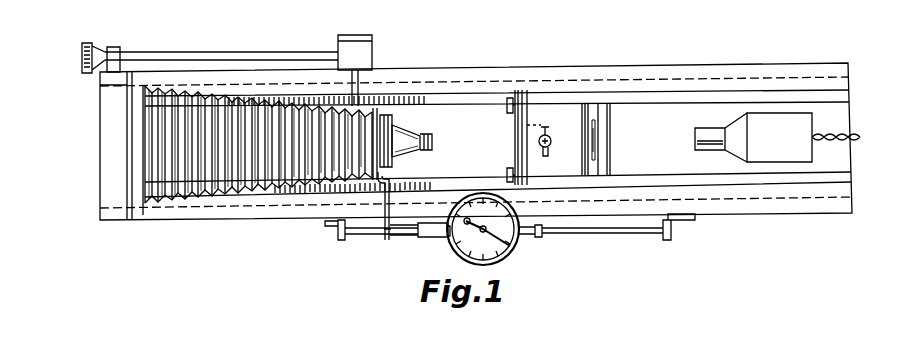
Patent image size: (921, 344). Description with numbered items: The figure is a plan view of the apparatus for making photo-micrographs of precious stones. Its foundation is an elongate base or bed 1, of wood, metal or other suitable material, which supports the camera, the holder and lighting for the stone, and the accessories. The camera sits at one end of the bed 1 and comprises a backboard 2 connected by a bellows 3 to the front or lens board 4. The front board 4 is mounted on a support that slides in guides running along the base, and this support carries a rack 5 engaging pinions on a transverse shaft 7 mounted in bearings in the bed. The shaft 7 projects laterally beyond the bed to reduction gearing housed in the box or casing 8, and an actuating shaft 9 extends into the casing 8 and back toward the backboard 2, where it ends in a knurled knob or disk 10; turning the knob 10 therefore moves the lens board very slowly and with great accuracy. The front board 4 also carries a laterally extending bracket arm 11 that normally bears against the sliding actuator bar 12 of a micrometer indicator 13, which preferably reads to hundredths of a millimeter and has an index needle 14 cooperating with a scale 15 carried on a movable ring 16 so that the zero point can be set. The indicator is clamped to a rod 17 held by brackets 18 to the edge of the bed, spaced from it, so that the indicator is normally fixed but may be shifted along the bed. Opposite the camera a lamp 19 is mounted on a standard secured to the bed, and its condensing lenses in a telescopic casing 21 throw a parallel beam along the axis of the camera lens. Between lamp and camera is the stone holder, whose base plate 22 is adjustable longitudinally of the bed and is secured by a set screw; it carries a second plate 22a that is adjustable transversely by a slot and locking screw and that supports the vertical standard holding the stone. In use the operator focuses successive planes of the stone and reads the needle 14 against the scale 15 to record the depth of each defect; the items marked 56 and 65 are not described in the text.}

The base or bed 1 is at (241, 216).
The backboard 2 is at (142, 216).
The bellows 3 is at (195, 208).
The front or lens board 4 is at (392, 128).
The rack 5 is at (422, 127).
The transverse shaft 7 is at (373, 70).
The box or casing 8 is at (353, 35).
The actuating shaft 9 is at (255, 52).
The knurled knob or disk 10 is at (90, 48).
The bracket arm 11 is at (385, 236).
The sliding actuator bar 12 is at (420, 236).
The micrometer indicator 13 is at (512, 254).
The index needle 14 is at (527, 238).
The scale 15 is at (456, 246).
The ring 16 is at (339, 234).
The rod 17 is at (375, 235).
The brackets 18 is at (667, 238).
The lamp 19 is at (779, 120).
The telescopic casing 21 is at (700, 128).
The base plate 22 is at (512, 112).
The second plate 22a is at (552, 110).
The lamp 56 is at (538, 141).
The slot 65 is at (598, 131).